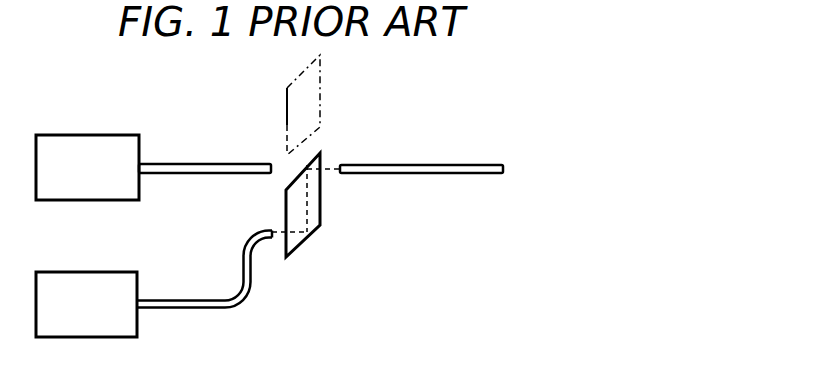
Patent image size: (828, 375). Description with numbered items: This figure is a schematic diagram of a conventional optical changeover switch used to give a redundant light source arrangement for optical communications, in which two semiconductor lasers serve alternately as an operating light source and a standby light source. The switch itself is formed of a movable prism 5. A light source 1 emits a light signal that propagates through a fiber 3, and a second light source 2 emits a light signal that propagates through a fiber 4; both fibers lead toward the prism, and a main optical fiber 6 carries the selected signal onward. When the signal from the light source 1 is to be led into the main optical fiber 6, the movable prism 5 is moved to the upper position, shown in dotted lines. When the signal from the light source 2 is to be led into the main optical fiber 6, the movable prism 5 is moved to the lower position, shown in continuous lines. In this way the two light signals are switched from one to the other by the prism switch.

The light source 1 is at (115, 135).
The light source 2 is at (112, 272).
The fiber 3 is at (196, 164).
The fiber 4 is at (187, 300).
The movable prism 5 is at (321, 204).
The main optical fiber 6 is at (416, 165).